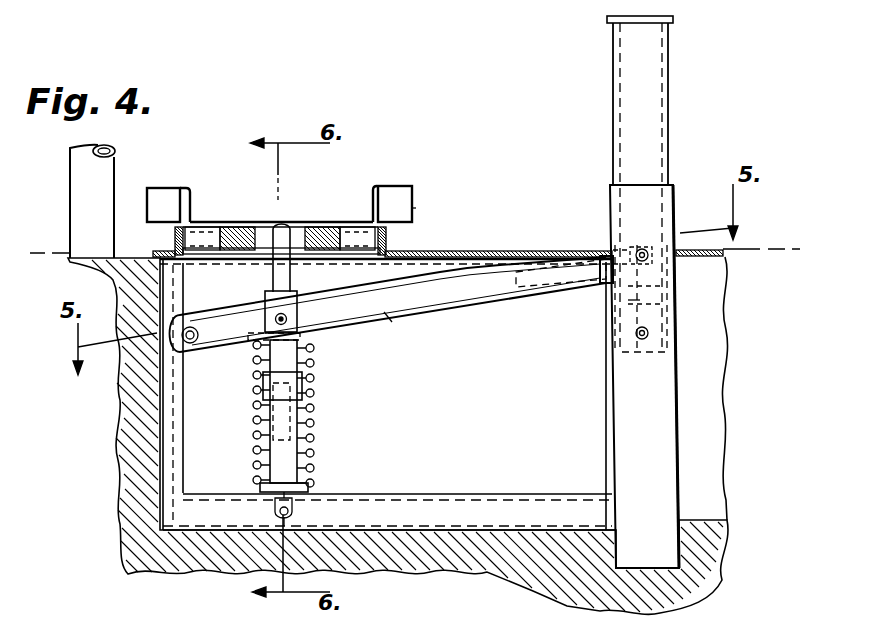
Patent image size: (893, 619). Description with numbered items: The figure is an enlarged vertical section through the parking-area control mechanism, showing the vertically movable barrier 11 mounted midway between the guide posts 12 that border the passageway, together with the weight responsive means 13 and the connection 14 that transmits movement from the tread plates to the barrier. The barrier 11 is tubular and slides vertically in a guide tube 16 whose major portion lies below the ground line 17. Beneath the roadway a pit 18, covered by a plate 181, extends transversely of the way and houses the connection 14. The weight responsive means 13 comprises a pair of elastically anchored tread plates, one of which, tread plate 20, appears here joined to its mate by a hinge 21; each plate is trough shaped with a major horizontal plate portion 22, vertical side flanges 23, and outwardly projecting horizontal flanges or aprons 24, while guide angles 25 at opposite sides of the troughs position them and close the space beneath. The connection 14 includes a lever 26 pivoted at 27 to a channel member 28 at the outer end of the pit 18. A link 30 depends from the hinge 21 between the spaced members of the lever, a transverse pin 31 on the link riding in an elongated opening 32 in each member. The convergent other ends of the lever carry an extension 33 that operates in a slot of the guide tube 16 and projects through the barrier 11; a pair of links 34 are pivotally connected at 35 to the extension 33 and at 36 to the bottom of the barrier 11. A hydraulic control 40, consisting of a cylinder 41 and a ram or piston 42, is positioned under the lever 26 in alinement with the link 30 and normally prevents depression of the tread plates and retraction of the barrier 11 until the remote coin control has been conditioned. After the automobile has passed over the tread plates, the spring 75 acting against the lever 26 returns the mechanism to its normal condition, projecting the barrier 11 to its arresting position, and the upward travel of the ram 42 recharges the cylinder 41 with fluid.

The barrier 11 is at (672, 97).
The guide posts 12 is at (114, 168).
The weight responsive means 13 is at (400, 180).
The connection 14 is at (462, 320).
The guide tube 16 is at (668, 423).
The ground line 17 is at (736, 255).
The pit 18 is at (389, 466).
The plate 181 is at (470, 251).
The tread plate 20 is at (206, 220).
The hinge 21 is at (325, 220).
The horizontal plate portion 22 is at (237, 226).
The vertical side flanges 23 is at (414, 201).
The horizontal flanges or aprons 24 is at (168, 190).
The guide angles 25 is at (178, 240).
The lever 26 is at (390, 322).
The pivot 27 is at (198, 345).
The channel member 28 is at (177, 412).
The link 30 is at (272, 280).
The transverse pin 31 is at (291, 310).
The elongated opening 32 is at (274, 319).
The extension 33 is at (618, 278).
The links 34 is at (630, 310).
The pivotal connection 35 is at (636, 255).
The pivotal connection 36 is at (636, 340).
The hydraulic control 40 is at (322, 421).
The cylinder 41 is at (290, 412).
The ram or piston 42 is at (306, 344).
The spring 75 is at (315, 448).